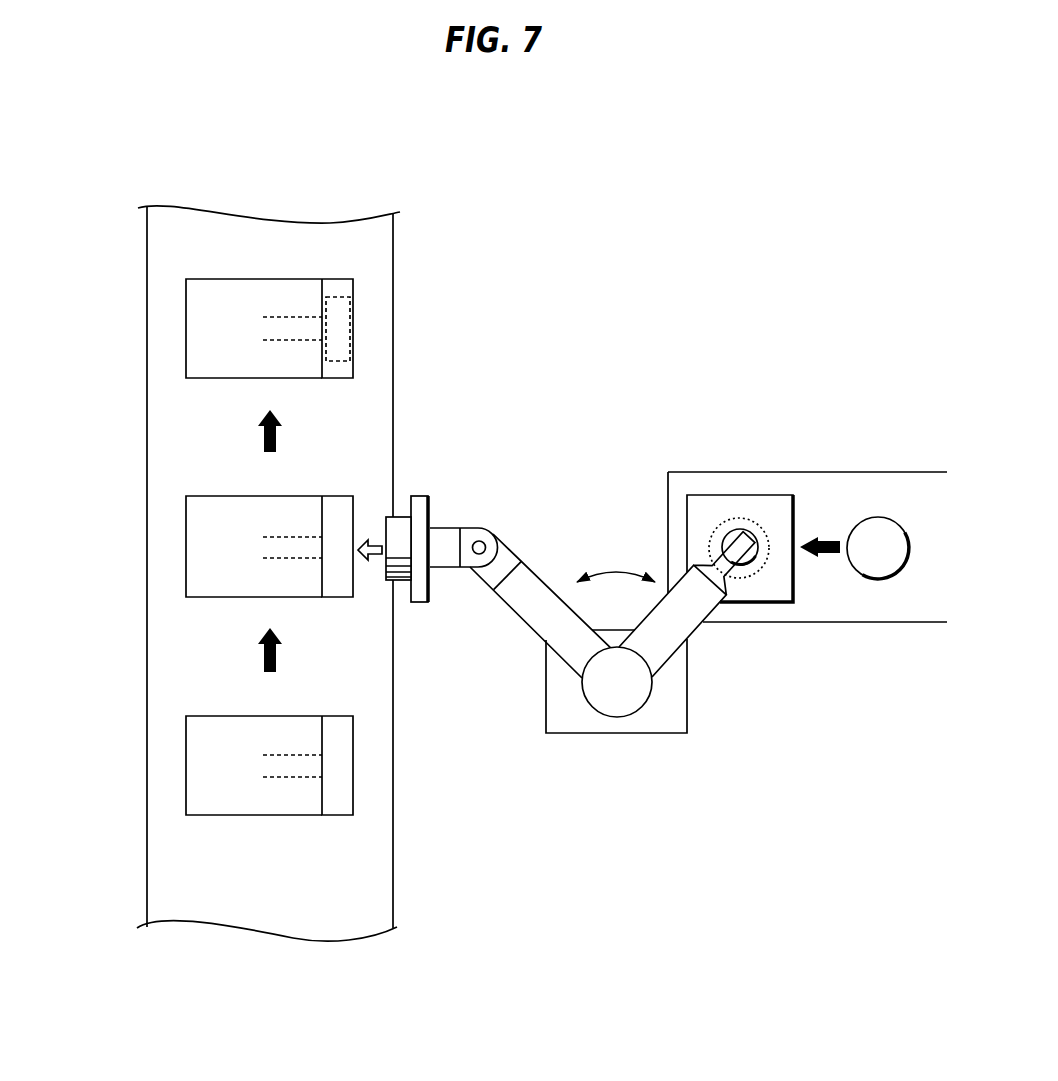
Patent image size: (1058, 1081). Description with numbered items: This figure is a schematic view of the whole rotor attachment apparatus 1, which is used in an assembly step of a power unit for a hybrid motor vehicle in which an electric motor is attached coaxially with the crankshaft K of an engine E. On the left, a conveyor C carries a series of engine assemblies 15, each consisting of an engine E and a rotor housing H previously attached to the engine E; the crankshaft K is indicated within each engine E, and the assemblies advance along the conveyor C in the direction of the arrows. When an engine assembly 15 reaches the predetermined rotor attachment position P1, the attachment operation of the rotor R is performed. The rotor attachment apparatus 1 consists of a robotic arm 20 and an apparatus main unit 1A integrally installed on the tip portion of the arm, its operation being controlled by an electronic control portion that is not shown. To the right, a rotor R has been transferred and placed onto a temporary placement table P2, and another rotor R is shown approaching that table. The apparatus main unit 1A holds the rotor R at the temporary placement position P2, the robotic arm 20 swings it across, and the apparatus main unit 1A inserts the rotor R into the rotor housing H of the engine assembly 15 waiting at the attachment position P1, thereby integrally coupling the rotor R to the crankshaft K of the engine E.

The rotor attachment apparatus 1 is at (575, 410).
The apparatus main unit 1A is at (432, 503).
The engine assembly 15 is at (234, 565).
The robotic arm 20 is at (532, 640).
The conveyor C is at (157, 725).
The engine E is at (227, 367).
The rotor housing H is at (340, 372).
The crankshaft K is at (287, 758).
The rotor R is at (343, 325).
The rotor attachment position P1 is at (157, 550).
The temporary placement table P2 is at (745, 483).